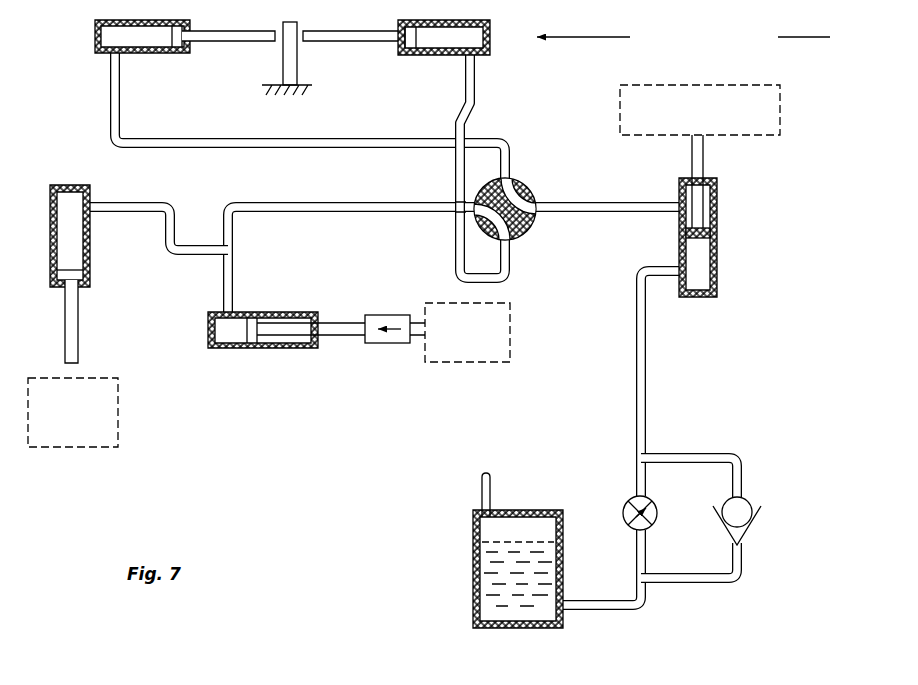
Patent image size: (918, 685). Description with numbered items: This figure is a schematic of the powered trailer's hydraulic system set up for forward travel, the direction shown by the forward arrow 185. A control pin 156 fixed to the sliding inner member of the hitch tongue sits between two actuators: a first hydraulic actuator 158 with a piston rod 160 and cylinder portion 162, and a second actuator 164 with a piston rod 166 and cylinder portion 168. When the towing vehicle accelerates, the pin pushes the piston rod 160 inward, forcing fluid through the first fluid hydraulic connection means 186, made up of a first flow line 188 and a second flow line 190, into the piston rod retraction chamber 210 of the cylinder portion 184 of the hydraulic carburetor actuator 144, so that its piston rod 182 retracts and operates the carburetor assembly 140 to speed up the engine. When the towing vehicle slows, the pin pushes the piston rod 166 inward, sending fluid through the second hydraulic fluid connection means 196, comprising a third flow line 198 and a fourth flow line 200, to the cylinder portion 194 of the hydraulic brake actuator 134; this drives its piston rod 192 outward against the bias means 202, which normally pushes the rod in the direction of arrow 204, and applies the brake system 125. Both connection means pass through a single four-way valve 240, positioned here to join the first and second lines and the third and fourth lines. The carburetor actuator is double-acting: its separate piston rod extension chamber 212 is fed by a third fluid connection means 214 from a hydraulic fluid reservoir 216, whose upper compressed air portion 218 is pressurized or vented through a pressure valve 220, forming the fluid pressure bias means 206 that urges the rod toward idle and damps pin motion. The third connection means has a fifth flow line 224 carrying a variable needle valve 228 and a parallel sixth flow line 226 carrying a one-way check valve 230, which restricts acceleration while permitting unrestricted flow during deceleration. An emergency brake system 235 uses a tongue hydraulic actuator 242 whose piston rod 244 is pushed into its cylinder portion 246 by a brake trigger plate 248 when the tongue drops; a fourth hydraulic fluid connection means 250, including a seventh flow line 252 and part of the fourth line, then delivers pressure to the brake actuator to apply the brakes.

The brake system 125 is at (468, 362).
The hydraulic brake actuator 134 is at (271, 332).
The carburetor assembly 140 is at (780, 135).
The hydraulic carburetor actuator 144 is at (735, 233).
The control pin 156 is at (294, 60).
The first hydraulic actuator 158 is at (106, 51).
The piston rod 160 is at (262, 12).
The cylinder portion 162 is at (157, 53).
The second actuator 164 is at (472, 42).
The piston rod 166 is at (373, 42).
The cylinder portion 168 is at (418, 55).
The piston rod 182 is at (704, 160).
The cylinder portion 184 is at (718, 282).
The forward arrow 185 is at (586, 40).
The first fluid hydraulic connection means 186 is at (337, 149).
The first flow line 188 is at (265, 148).
The second flow line 190 is at (603, 205).
The piston rod 192 is at (347, 337).
The cylinder portion 194 is at (233, 350).
The second hydraulic fluid connection means 196 is at (454, 181).
The third flow line 198 is at (457, 253).
The fourth flow line 200 is at (326, 212).
The bias means 202 is at (395, 330).
The arrow 204 is at (389, 322).
The fluid pressure bias means 206 is at (621, 452).
The piston rod retraction chamber 210 is at (710, 198).
The piston rod extension chamber 212 is at (698, 292).
The third fluid connection means 214 is at (650, 413).
The hydraulic fluid reservoir 216 is at (476, 550).
The upper compressed air portion 218 is at (488, 530).
The pressure valve 220 is at (482, 487).
The fifth flow line 224 is at (636, 483).
The sixth flow line 226 is at (733, 478).
The variable needle valve 228 is at (655, 525).
The one-way check valve 230 is at (757, 518).
The emergency brake system 235 is at (133, 349).
The four-way valve 240 is at (521, 190).
The tongue hydraulic actuator 242 is at (94, 270).
The piston rod 244 is at (78, 328).
The cylinder portion 246 is at (90, 228).
The brake trigger plate 248 is at (118, 438).
The fourth hydraulic fluid connection means 250 is at (198, 221).
The seventh flow line 252 is at (186, 257).